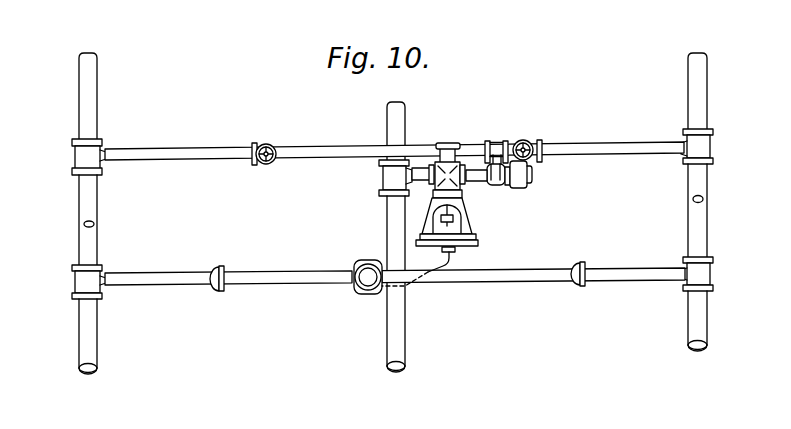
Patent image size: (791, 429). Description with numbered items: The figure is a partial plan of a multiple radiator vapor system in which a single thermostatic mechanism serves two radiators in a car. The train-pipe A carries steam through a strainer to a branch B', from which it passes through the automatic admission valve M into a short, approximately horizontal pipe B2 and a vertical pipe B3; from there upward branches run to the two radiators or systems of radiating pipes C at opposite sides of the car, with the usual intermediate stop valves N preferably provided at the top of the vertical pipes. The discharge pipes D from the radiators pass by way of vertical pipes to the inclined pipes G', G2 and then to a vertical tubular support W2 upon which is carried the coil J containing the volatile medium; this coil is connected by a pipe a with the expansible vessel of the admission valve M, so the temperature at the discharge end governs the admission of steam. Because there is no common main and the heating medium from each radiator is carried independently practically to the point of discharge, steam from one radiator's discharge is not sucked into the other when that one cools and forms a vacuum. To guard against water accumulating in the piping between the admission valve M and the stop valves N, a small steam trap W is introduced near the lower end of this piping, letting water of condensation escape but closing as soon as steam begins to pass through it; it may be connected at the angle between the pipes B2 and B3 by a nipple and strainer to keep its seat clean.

The radiators C is at (96, 206).
The train-pipe A is at (394, 232).
The intermediate stop valve N is at (525, 143).
The branch B' is at (423, 149).
The short approximately horizontal pipe B2 is at (476, 182).
The vertical pipe B3 is at (497, 158).
The automatic admission valve M is at (451, 183).
The steam trap W is at (530, 178).
The inclined pipe G' is at (228, 292).
The inclined pipe G2 is at (516, 281).
The discharge pipe D is at (620, 283).
The coil J is at (356, 268).
The vertical tubular support W2 is at (364, 284).
The pipe a is at (419, 285).